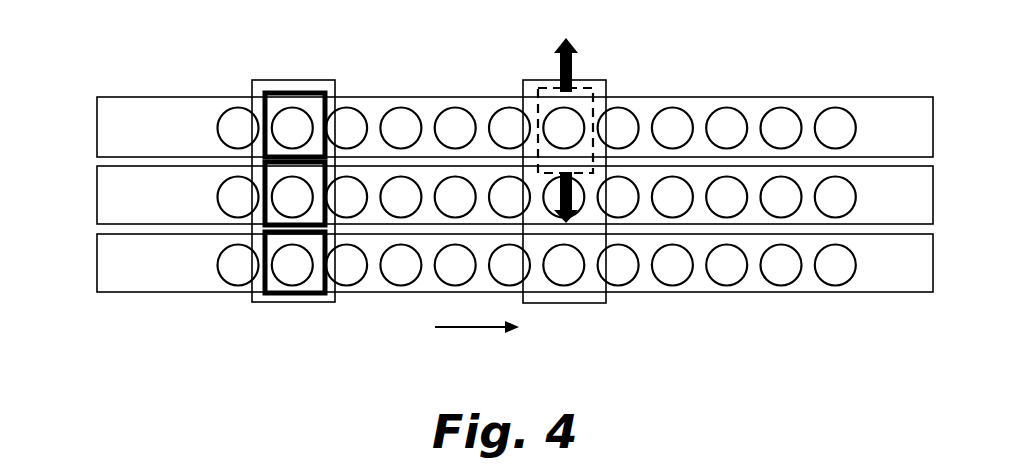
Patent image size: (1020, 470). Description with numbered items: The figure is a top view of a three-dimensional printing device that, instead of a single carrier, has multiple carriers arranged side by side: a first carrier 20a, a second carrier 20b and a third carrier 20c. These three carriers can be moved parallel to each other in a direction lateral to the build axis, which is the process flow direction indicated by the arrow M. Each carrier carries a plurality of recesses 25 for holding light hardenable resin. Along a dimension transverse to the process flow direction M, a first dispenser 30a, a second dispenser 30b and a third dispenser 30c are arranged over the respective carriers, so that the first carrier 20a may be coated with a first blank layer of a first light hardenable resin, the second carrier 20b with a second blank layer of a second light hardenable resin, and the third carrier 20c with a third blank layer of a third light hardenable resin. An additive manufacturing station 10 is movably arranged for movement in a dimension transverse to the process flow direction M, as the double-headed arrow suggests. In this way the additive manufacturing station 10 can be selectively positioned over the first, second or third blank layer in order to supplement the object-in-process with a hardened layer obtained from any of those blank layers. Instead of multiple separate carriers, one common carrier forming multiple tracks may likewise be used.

The additive manufacturing station 10 is at (590, 90).
The first carrier 20a is at (108, 128).
The second carrier 20b is at (108, 197).
The third carrier 20c is at (108, 268).
The recesses 25 is at (237, 112).
The first dispenser 30a is at (295, 93).
The second dispenser 30b is at (260, 217).
The third dispenser 30c is at (303, 295).
The process flow direction M is at (472, 327).